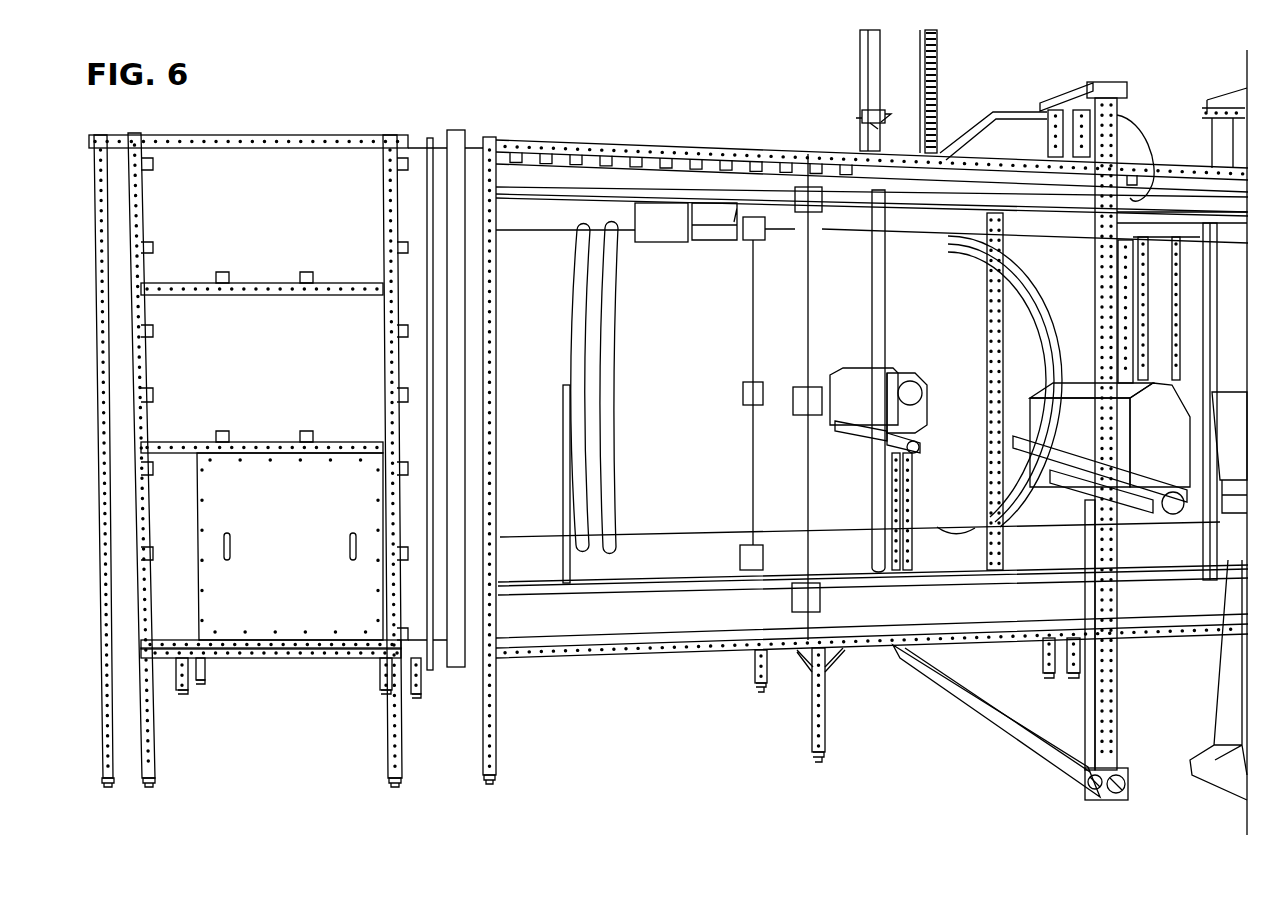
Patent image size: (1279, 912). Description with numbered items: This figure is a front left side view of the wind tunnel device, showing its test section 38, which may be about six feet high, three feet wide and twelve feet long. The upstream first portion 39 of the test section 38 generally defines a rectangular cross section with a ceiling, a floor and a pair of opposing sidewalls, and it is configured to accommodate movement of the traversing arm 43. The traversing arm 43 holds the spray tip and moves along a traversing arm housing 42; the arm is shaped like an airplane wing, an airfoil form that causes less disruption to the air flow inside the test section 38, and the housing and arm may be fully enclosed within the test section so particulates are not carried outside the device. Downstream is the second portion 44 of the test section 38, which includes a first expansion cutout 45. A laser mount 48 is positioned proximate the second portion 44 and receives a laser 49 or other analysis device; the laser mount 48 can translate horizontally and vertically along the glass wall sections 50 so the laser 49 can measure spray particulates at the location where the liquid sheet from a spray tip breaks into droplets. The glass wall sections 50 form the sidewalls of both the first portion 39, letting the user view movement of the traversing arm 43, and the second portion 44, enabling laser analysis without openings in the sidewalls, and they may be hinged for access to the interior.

The test section 38 is at (683, 148).
The first portion 39 is at (758, 188).
The traversing arm housing 42 is at (865, 55).
The traversing arm 43 is at (880, 137).
The second portion 44 is at (1139, 153).
The first expansion cutout 45 is at (1030, 127).
The laser mount 48 is at (1147, 502).
The laser 49 is at (1090, 441).
The glass wall sections 50 is at (623, 215).